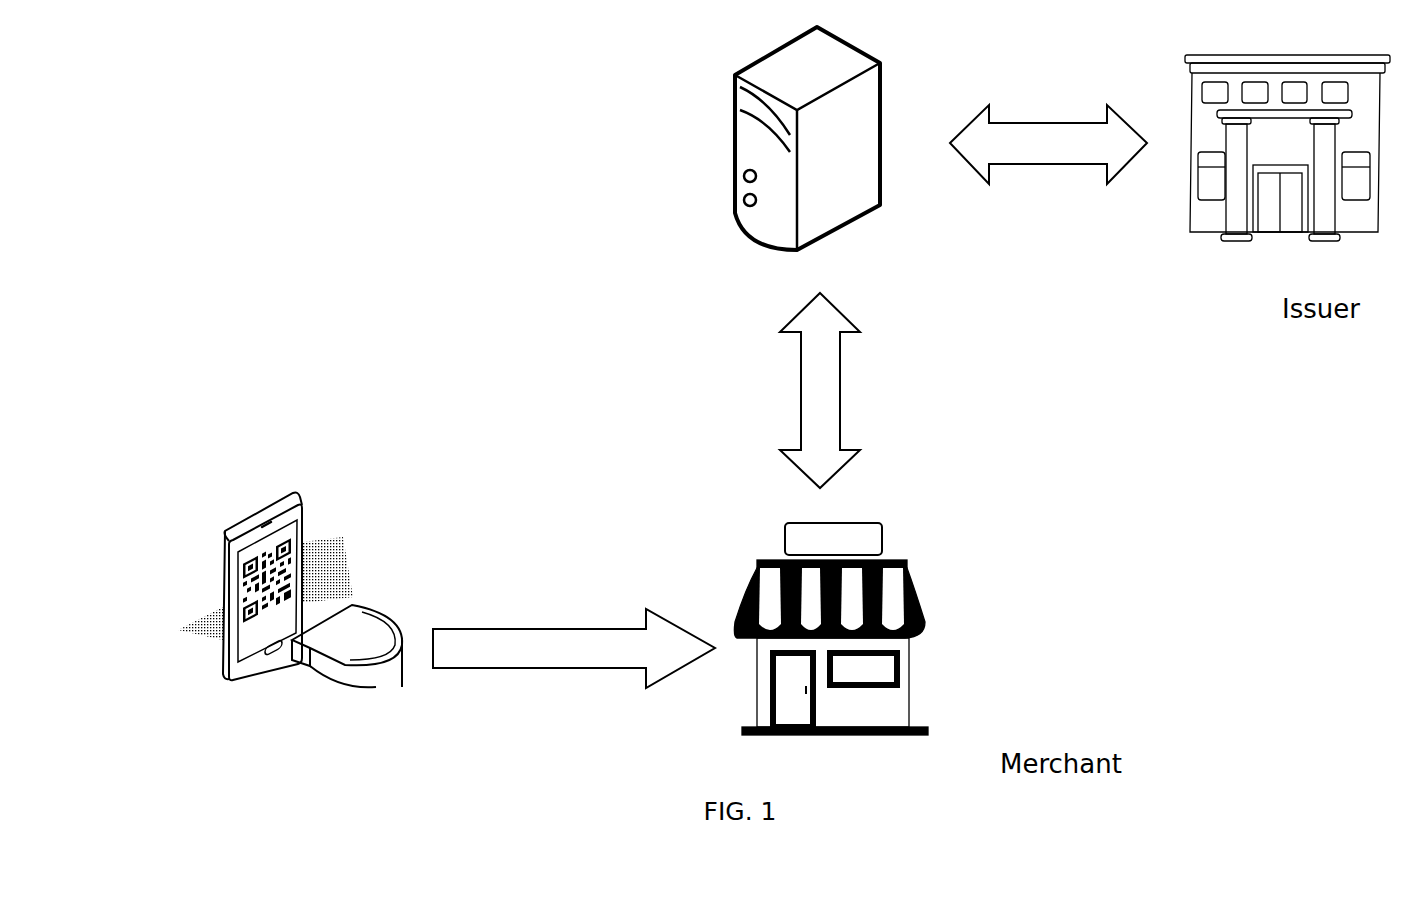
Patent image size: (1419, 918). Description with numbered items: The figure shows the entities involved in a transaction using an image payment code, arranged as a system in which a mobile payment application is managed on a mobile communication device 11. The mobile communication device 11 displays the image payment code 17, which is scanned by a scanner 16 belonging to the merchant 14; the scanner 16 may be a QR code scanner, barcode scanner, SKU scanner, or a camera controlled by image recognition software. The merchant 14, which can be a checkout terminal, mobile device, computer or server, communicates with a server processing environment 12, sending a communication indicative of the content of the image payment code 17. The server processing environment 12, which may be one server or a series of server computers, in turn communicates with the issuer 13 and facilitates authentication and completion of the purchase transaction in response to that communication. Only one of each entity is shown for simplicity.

The mobile communication device 11 is at (268, 502).
The server processing environment 12 is at (733, 125).
The issuer 13 is at (1267, 233).
The merchant 14 is at (910, 687).
The scanner 16 is at (343, 685).
The image payment code 17 is at (242, 583).